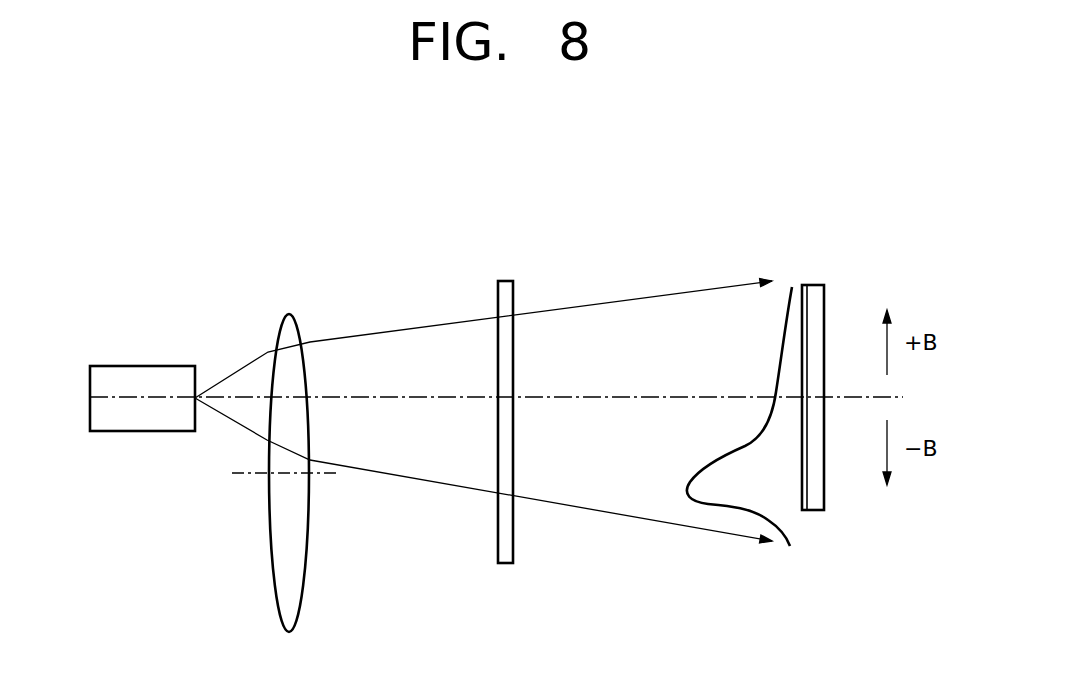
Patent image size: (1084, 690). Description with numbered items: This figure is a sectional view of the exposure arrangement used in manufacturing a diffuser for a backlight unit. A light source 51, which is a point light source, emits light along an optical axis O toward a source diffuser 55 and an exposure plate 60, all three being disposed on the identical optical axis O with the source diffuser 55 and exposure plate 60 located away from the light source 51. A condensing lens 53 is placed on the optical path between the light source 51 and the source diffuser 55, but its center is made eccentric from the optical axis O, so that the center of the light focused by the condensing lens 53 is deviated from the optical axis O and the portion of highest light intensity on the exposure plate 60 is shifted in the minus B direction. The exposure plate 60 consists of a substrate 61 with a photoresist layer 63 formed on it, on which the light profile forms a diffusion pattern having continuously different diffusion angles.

The light source 51 is at (145, 366).
The condensing lens 53 is at (289, 312).
The source diffuser 55 is at (505, 280).
The exposure plate 60 is at (805, 374).
The substrate 61 is at (822, 285).
The photoresist layer 63 is at (802, 284).
The optical axis O is at (618, 398).